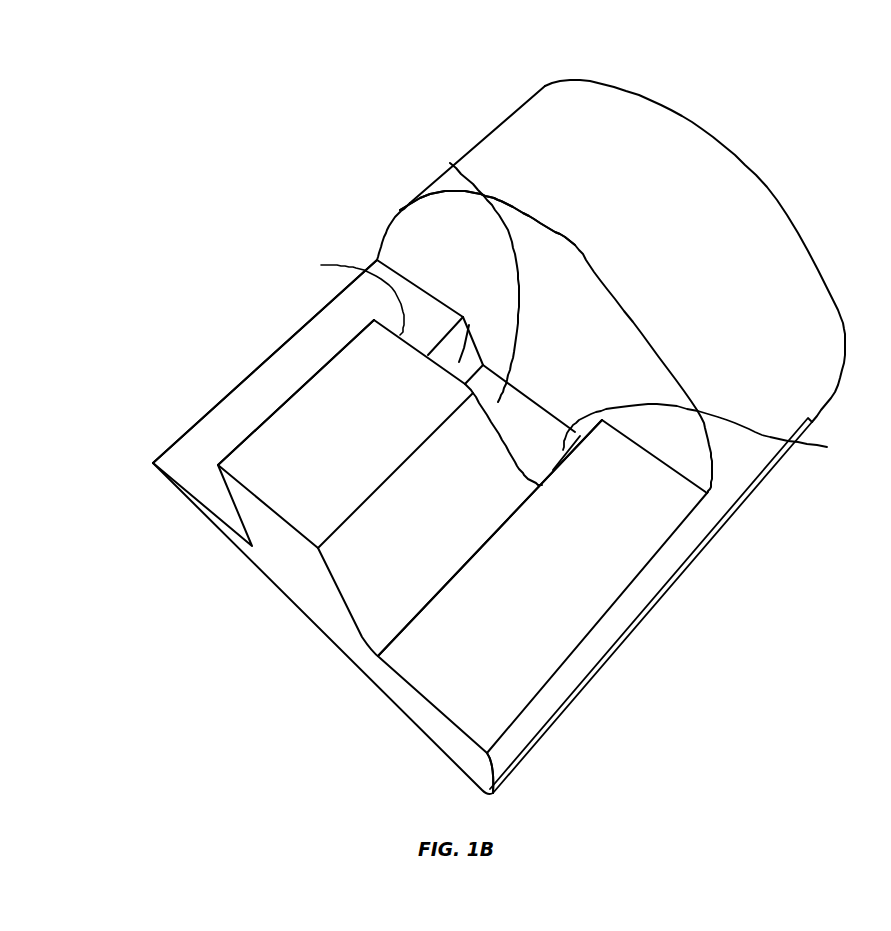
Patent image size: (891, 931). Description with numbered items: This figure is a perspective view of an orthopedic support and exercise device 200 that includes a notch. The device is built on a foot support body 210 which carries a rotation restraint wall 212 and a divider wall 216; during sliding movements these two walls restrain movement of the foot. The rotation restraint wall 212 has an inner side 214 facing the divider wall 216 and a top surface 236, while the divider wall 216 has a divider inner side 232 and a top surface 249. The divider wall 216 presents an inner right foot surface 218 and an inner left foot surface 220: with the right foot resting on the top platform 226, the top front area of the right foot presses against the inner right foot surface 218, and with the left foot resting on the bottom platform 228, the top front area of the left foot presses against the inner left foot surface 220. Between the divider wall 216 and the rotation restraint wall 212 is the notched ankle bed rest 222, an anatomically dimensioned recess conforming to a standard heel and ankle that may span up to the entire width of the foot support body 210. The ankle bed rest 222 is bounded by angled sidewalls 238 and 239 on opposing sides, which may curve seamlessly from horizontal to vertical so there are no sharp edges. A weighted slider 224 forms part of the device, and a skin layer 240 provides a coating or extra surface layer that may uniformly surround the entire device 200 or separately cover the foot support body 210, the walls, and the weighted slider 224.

The orthopedic support and exercise device 200 is at (204, 209).
The foot support body 210 is at (307, 617).
The rotation restraint wall 212 is at (752, 213).
The inner side of rotation restraint wall 214 is at (687, 438).
The divider wall 216 is at (285, 540).
The inner right foot surface 218 is at (243, 440).
The inner left foot surface 220 is at (367, 650).
The notched ankle bed rest 222 is at (450, 163).
The weighted slider 224 is at (565, 711).
The top platform 226 is at (255, 390).
The bottom platform 228 is at (467, 693).
The divider inner side 232 is at (278, 358).
The top surface of rotation restraint wall 236 is at (714, 136).
The angled sidewall 238 is at (400, 210).
The angled sidewall 239 is at (827, 447).
The skin layer 240 is at (631, 122).
The top surface of divider wall 249 is at (300, 477).